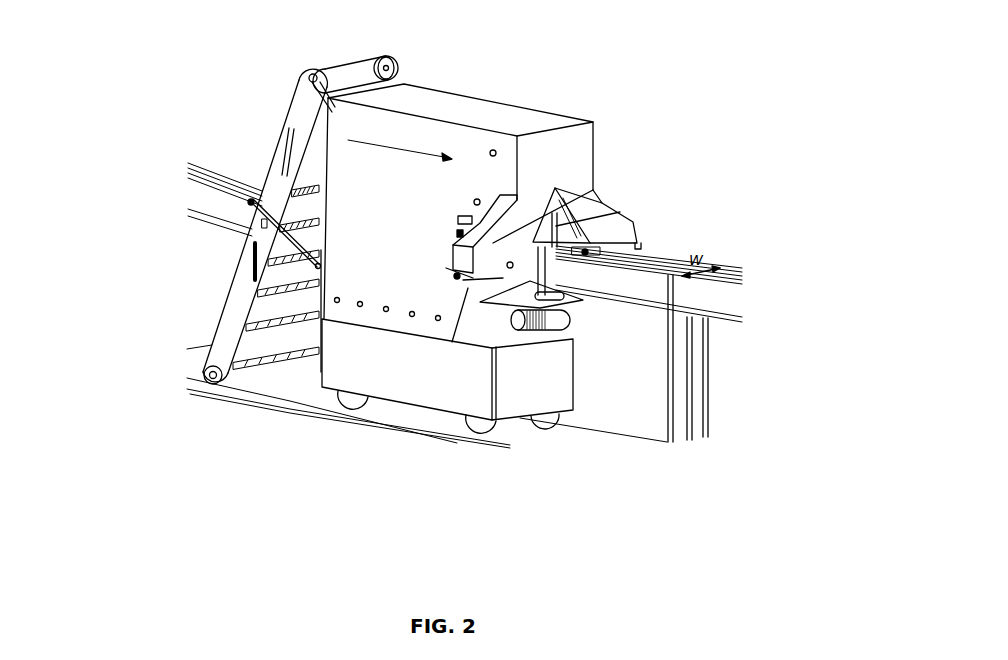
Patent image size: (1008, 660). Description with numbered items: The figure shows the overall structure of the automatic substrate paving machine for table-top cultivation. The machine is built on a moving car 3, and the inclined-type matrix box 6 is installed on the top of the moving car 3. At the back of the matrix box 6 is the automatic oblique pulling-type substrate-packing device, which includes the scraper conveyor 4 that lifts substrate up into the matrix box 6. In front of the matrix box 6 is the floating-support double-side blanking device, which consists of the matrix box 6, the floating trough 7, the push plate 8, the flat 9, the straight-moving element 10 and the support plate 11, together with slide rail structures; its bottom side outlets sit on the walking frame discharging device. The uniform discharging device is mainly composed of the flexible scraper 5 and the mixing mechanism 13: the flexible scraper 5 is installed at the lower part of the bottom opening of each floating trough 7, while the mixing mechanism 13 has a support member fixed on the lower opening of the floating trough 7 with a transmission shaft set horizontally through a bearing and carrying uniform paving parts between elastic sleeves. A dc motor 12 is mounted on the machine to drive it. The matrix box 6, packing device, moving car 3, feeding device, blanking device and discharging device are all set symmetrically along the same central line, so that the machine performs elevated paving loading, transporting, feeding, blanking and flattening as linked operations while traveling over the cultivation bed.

The moving car 3 is at (430, 383).
The scraper conveyor 4 is at (258, 192).
The flexible scraper 5 is at (455, 276).
The matrix box 6 is at (398, 96).
The floating trough 7 is at (588, 218).
The push plate 8 is at (556, 226).
The flat 9 is at (525, 242).
The straight-moving element 10 is at (550, 275).
The support plate 11 is at (573, 303).
The dc motor 12 is at (562, 347).
The mixing mechanism 13 is at (466, 280).